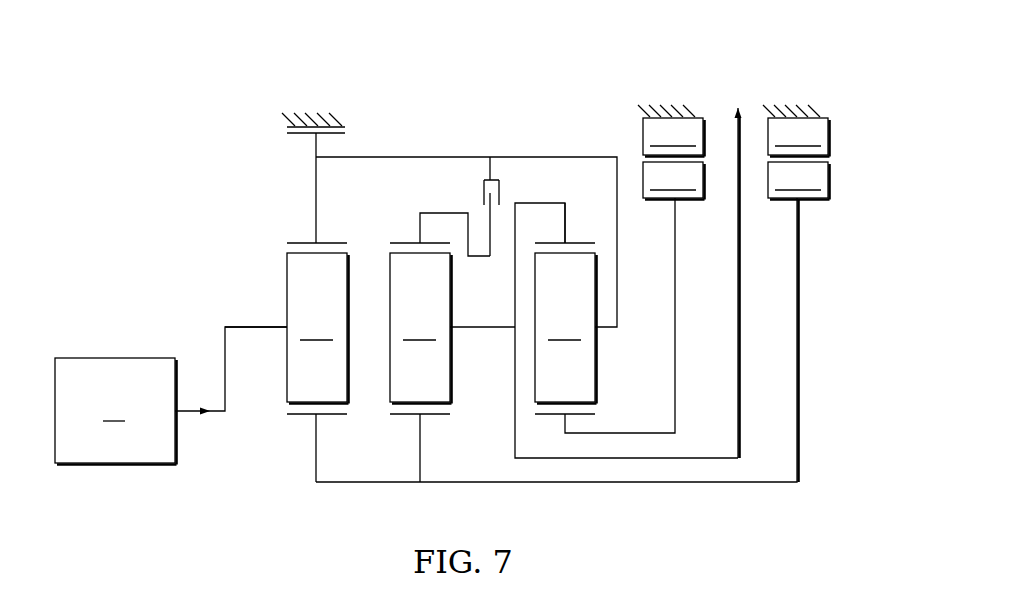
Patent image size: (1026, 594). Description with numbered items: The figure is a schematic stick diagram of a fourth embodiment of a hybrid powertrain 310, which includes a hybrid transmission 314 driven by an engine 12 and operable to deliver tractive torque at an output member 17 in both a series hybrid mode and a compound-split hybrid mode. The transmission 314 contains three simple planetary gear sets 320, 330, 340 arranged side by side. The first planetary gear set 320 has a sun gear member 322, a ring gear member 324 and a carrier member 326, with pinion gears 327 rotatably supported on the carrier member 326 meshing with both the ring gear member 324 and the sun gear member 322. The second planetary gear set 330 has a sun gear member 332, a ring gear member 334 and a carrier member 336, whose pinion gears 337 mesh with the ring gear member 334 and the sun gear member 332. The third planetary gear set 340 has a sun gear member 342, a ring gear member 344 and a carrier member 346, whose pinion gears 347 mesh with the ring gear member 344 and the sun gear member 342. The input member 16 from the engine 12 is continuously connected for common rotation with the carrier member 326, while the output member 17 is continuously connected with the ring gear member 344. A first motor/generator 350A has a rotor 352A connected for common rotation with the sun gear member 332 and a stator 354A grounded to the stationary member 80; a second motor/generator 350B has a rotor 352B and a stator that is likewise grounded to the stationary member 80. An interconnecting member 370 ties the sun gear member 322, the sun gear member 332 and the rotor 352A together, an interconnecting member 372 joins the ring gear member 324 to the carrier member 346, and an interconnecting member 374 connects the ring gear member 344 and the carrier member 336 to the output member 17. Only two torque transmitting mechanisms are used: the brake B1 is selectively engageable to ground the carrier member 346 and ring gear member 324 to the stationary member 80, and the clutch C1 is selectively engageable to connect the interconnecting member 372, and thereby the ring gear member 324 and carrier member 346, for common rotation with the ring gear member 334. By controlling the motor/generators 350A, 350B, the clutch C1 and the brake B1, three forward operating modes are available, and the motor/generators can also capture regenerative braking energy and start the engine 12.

The hybrid powertrain 310 is at (166, 110).
The engine 12 is at (116, 411).
The input member 16 is at (192, 412).
The output member 17 is at (740, 318).
The stationary member 80 is at (306, 112).
The brake B1 is at (296, 143).
The clutch C1 is at (508, 180).
The hybrid transmission 314 is at (603, 40).
The planetary gear set 320 is at (305, 436).
The sun gear member 322 is at (302, 419).
The ring gear member 324 is at (304, 242).
The carrier member 326 is at (258, 326).
The pinion gears 327 is at (318, 328).
The planetary gear set 330 is at (433, 428).
The sun gear member 332 is at (405, 419).
The ring gear member 334 is at (408, 242).
The carrier member 336 is at (497, 330).
The pinion gears 337 is at (421, 328).
The planetary gear set 340 is at (588, 420).
The sun gear member 342 is at (548, 419).
The ring gear member 344 is at (581, 242).
The carrier member 346 is at (604, 330).
The pinion gears 347 is at (566, 328).
The first motor/generator 350A is at (838, 155).
The second motor/generator 350B is at (711, 155).
The rotor 352A is at (799, 181).
The rotor 352B is at (674, 181).
The stator 354A is at (736, 137).
The interconnecting member 370 is at (367, 483).
The interconnecting member 372 is at (400, 156).
The interconnecting member 374 is at (513, 313).